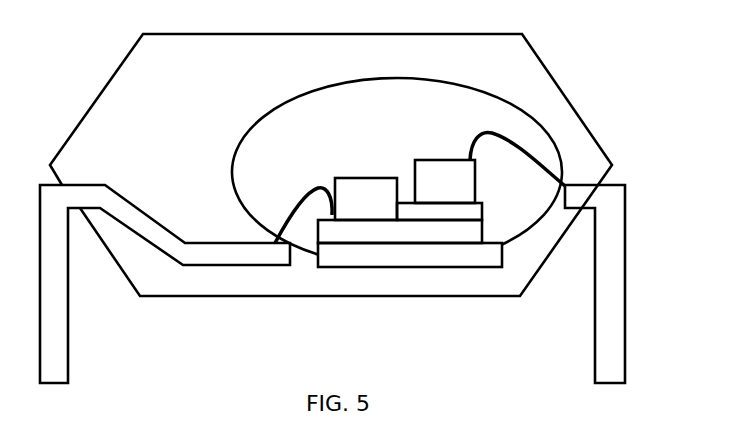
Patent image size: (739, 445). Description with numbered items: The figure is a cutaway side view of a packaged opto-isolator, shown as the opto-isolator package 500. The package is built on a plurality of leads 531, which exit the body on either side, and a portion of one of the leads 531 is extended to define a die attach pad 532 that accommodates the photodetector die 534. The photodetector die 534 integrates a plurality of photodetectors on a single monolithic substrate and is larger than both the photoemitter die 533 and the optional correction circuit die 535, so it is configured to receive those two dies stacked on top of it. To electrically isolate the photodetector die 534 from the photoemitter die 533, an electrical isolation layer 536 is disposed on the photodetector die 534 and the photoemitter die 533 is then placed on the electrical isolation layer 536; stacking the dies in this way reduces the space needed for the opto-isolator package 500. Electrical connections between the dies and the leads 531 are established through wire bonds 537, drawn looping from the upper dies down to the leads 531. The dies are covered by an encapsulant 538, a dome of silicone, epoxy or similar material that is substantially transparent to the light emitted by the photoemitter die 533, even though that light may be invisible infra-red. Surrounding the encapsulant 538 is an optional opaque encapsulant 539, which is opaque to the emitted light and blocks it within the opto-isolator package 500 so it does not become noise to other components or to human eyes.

The opto-isolator package 500 is at (67, 64).
The leads 531 is at (58, 328).
The die attach pad 532 is at (404, 254).
The photoemitter die 533 is at (430, 192).
The photodetector die 534 is at (386, 228).
The correction circuit die 535 is at (351, 206).
The electrical isolation layer 536 is at (457, 212).
The wire bonds 537 is at (519, 149).
The encapsulant 538 is at (353, 113).
The opaque encapsulant 539 is at (143, 153).